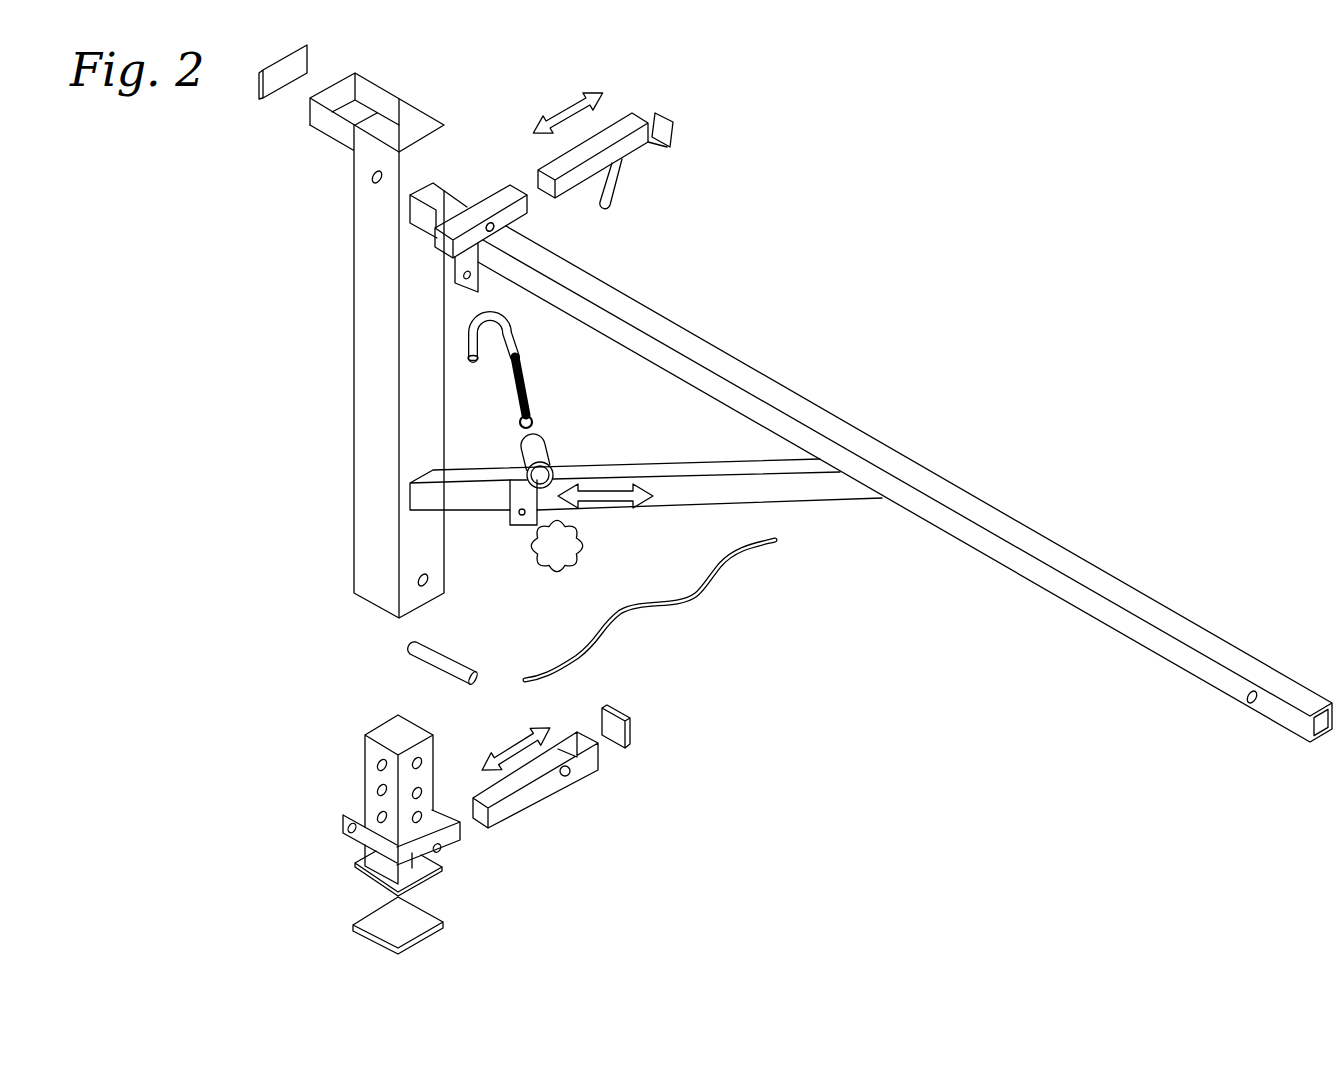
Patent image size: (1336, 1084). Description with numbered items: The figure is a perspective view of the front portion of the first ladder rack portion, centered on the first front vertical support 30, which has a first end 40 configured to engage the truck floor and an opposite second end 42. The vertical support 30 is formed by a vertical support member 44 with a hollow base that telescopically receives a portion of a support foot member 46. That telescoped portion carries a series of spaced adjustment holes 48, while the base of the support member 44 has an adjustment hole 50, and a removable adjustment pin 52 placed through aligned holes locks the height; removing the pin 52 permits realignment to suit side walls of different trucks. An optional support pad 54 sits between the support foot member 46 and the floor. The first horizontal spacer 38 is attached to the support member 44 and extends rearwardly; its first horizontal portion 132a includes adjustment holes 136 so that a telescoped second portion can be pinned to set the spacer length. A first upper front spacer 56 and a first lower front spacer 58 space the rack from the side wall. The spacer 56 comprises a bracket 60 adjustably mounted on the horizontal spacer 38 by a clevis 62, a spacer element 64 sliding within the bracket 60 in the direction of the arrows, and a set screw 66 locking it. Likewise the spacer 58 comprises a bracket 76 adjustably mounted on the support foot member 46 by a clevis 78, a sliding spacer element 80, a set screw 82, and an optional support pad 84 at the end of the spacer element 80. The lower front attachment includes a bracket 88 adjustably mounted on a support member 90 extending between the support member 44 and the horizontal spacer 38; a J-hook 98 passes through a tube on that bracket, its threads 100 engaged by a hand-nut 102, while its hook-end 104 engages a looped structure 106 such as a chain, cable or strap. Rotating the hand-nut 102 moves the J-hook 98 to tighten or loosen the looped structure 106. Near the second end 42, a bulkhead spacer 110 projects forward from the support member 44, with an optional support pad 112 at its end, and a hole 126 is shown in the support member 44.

The first front vertical support 30 is at (380, 349).
The first horizontal spacer 38 is at (905, 484).
The first end 40 is at (400, 840).
The second end 42 is at (405, 349).
The vertical support member 44 is at (367, 311).
The support foot member 46 is at (365, 755).
The adjustment holes 48 is at (418, 760).
The adjustment hole 50 is at (427, 587).
The removable adjustment pin 52 is at (428, 664).
The support pad 54 is at (430, 938).
The first upper front spacer 56 is at (646, 203).
The first lower front spacer 58 is at (565, 848).
The bracket 60 is at (478, 197).
The clevis 62 is at (478, 291).
The spacer element 64 is at (615, 133).
The set screw 66 is at (493, 229).
The bracket 76 is at (455, 840).
The clevis 78 is at (343, 818).
The spacer element 80 is at (545, 797).
The set screw 82 is at (440, 857).
The support pad 84 is at (628, 747).
The bracket 88 is at (492, 539).
The support member 90 is at (693, 504).
The J-hook 98 is at (490, 369).
The threads 100 is at (530, 410).
The hand-nut 102 is at (572, 578).
The hook-end 104 is at (512, 312).
The looped structure 106 is at (722, 572).
The bulkhead spacer 110 is at (385, 89).
The support pad 112 is at (260, 102).
The hole 126 is at (372, 184).
The first horizontal portion 132a is at (1057, 555).
The adjustment holes 136 is at (1247, 702).